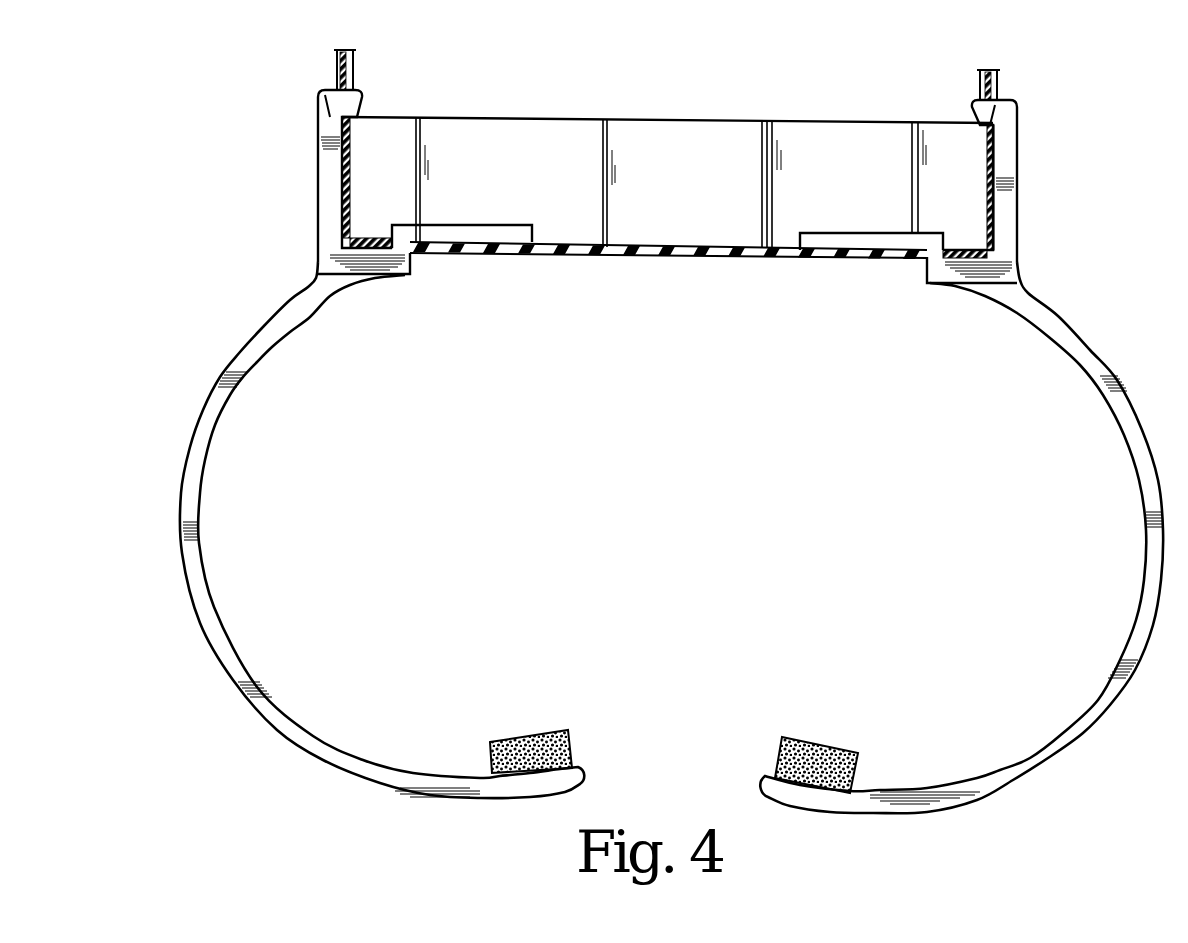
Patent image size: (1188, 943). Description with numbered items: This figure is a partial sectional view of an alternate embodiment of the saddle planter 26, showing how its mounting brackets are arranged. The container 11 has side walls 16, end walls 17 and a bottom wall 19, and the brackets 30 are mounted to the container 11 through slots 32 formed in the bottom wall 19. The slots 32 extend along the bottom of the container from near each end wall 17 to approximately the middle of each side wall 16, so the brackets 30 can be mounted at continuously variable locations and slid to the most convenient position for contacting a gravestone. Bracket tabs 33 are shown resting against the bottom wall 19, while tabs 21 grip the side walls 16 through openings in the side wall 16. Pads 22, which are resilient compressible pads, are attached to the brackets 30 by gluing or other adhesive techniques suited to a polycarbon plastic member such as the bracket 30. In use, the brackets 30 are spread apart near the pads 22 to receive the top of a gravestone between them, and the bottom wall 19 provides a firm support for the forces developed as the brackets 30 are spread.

The container 11 is at (722, 120).
The side wall 16 is at (348, 68).
The end wall 17 is at (352, 82).
The bottom wall 19 is at (655, 247).
The tabs 21 is at (364, 108).
The pads 22 is at (538, 740).
The saddle planter 26 is at (276, 198).
The brackets 30 is at (253, 335).
The slots 32 is at (414, 256).
The bracket tabs 33 is at (492, 226).